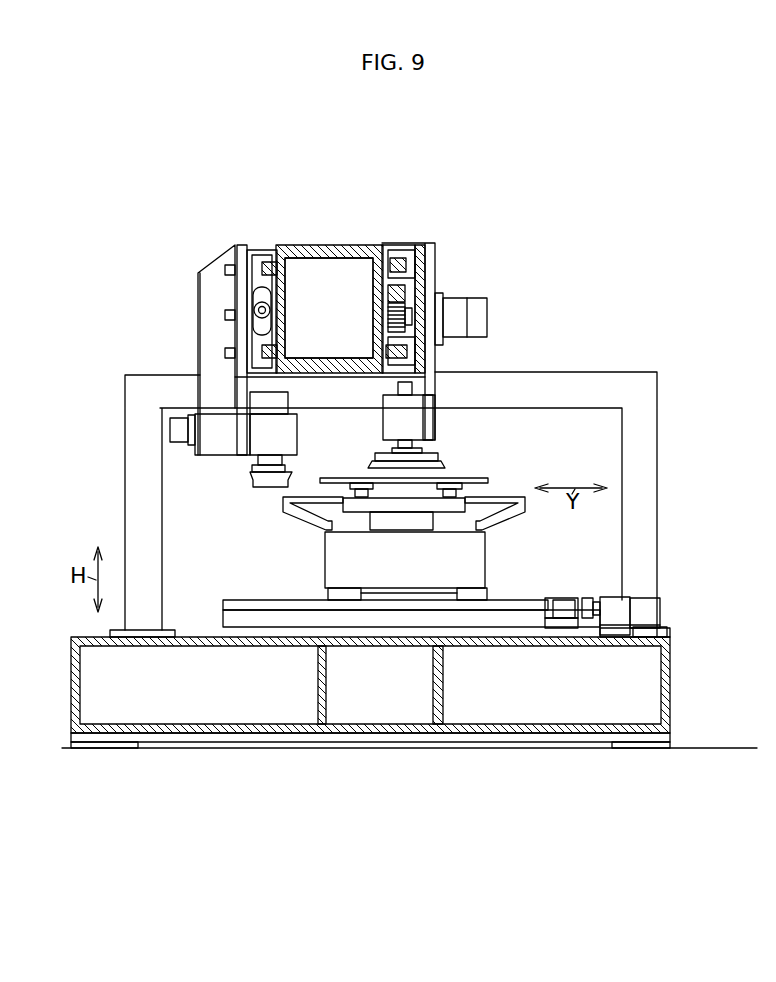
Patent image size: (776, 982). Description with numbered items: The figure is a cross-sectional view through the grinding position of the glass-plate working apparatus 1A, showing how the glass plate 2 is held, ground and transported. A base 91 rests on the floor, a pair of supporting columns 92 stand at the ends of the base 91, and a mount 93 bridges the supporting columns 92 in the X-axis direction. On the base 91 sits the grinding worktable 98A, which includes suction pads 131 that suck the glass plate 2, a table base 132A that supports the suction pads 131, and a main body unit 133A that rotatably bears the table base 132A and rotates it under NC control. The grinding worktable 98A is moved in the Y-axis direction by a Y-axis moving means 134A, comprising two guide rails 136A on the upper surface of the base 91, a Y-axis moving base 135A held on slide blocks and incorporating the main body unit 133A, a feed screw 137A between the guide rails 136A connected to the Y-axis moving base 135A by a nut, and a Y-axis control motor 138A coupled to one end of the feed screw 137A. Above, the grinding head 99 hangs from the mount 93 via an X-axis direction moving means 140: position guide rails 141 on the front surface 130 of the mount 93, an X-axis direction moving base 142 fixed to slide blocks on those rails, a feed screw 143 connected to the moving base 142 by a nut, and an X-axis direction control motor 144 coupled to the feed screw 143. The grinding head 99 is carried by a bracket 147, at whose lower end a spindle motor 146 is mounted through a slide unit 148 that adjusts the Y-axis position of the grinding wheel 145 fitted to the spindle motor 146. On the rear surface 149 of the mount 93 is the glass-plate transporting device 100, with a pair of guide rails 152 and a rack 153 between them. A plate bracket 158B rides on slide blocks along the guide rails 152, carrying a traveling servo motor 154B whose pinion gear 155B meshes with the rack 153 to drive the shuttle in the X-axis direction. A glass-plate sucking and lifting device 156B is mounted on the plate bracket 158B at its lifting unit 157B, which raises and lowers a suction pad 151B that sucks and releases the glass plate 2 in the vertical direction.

The glass-plate working apparatus 1A is at (625, 353).
The glass plate 2 is at (468, 480).
The base 91 is at (198, 640).
The supporting columns 92 is at (643, 422).
The mount 93 is at (347, 252).
The grinding worktable 98A is at (445, 570).
The grinding head 99 is at (263, 422).
The glass-plate transporting device 100 is at (433, 233).
The front surface 130 is at (278, 260).
The suction pads 131 is at (338, 498).
The table base 132A is at (350, 533).
The main body unit 133A is at (333, 532).
The Y-axis moving means 134A is at (503, 603).
The Y-axis moving base 135A is at (437, 582).
The guide rails 136A is at (377, 617).
The feed screw 137A is at (558, 600).
The Y-axis control motor 138A is at (620, 613).
The X-axis direction moving means 140 is at (233, 281).
The position guide rails 141 is at (275, 263).
The X-axis direction moving base 142 is at (248, 247).
The feed screw 143 is at (254, 310).
The X-axis direction control motor 144 is at (250, 335).
The grinding wheel 145 is at (253, 477).
The spindle motor 146 is at (263, 417).
The bracket 147 is at (222, 403).
The slide unit 148 is at (170, 437).
The rear surface 149 is at (385, 248).
The suction pad 151B is at (380, 463).
The guide rails 152 is at (396, 258).
The rack 153 is at (400, 292).
The traveling servo motor 154B is at (472, 320).
The pinion gear 155B is at (423, 347).
The glass-plate sucking and lifting device 156B is at (400, 408).
The lifting unit 157B is at (413, 420).
The plate bracket 158B is at (418, 272).